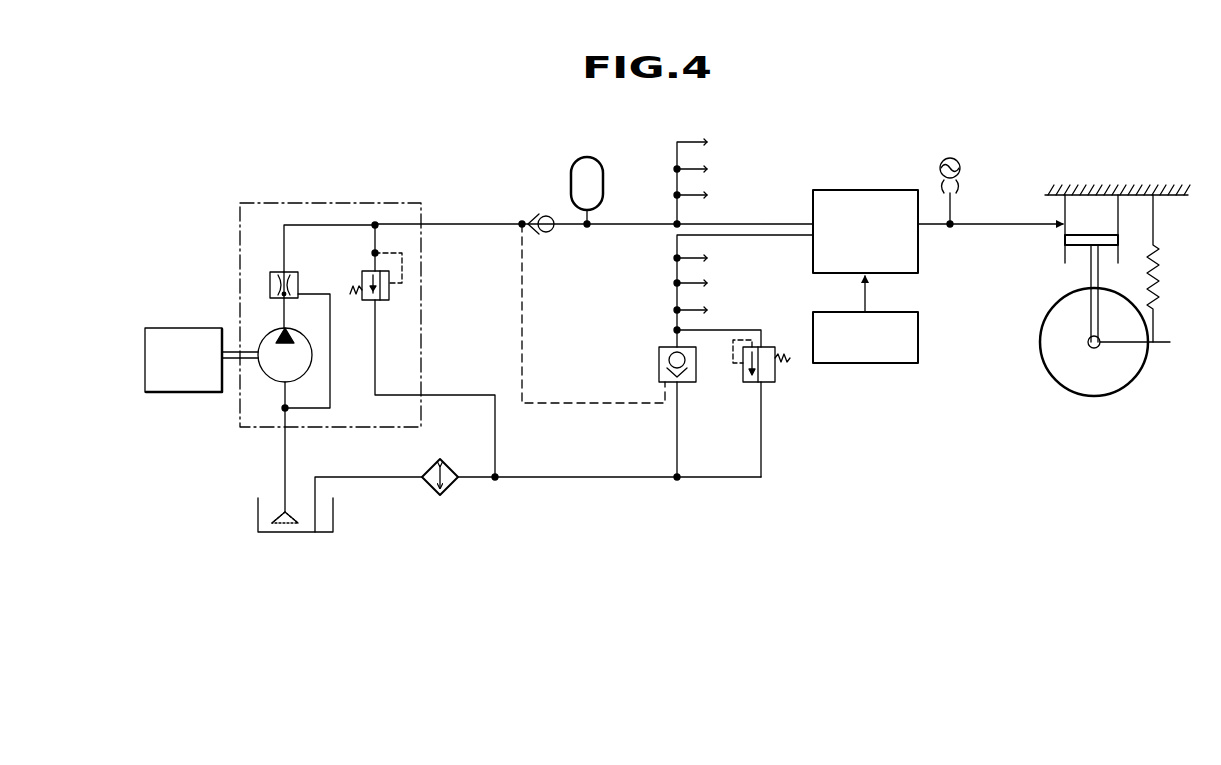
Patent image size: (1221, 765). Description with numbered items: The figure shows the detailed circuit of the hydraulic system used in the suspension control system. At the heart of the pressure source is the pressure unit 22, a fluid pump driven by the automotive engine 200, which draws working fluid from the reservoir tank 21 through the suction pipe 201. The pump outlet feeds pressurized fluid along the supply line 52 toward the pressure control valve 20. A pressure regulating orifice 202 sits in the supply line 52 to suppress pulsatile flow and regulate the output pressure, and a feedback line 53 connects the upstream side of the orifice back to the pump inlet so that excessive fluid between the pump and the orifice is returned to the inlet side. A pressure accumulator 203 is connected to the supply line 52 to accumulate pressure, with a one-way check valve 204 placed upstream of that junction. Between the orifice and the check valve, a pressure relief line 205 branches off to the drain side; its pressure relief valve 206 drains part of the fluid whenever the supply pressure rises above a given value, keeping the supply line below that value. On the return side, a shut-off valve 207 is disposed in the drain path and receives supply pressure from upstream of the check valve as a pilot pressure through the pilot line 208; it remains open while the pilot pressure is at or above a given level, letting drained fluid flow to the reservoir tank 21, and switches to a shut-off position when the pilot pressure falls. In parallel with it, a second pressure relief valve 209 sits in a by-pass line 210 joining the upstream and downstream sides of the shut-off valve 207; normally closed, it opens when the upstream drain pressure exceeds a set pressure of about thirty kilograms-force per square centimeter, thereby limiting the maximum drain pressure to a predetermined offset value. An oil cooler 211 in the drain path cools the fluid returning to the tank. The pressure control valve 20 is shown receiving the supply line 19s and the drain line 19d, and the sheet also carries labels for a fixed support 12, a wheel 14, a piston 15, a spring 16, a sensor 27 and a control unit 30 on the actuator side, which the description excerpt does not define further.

The vehicle body / fixed support 12 is at (1120, 193).
The wheel 14 is at (1093, 385).
The piston of hydraulic cylinder 15 is at (1062, 236).
The spring 16 is at (1158, 275).
The supply line 19s is at (449, 223).
The drain (return) line 19d is at (620, 478).
The pressure control valve 20 is at (857, 190).
The reservoir tank 21 is at (258, 513).
The pressure unit 22 is at (258, 386).
The pressure sensor 27 is at (940, 230).
The control unit 30 is at (873, 364).
The supply line 52 is at (326, 225).
The feedback line 53 is at (330, 325).
The automotive engine 200 is at (180, 328).
The suction pipe 201 is at (285, 460).
The pressure regulating orifice 202 is at (270, 277).
The pressure accumulator 203 is at (603, 172).
The one-way check valve 204 is at (536, 216).
The pressure relief line 205 is at (375, 357).
The pressure relief valve 206 is at (389, 295).
The shut-off valve 207 is at (659, 372).
The pilot line 208 is at (522, 347).
The pressure relief valve 209 is at (767, 382).
The by-pass line 210 is at (761, 430).
The oil cooler 211 is at (452, 488).